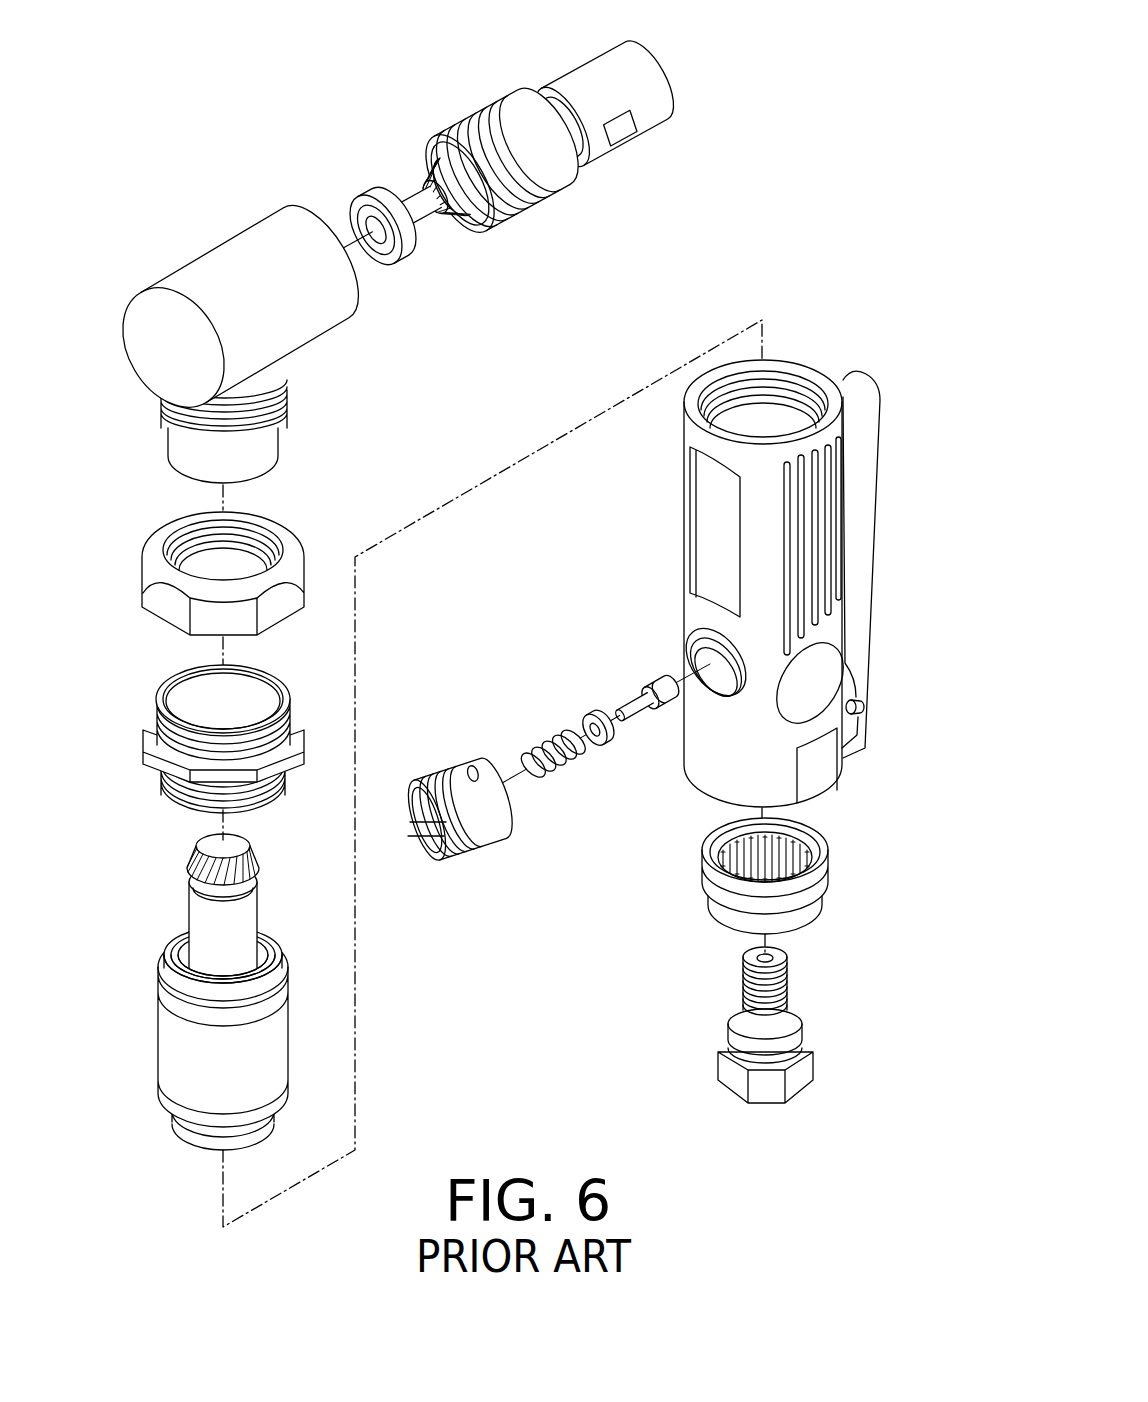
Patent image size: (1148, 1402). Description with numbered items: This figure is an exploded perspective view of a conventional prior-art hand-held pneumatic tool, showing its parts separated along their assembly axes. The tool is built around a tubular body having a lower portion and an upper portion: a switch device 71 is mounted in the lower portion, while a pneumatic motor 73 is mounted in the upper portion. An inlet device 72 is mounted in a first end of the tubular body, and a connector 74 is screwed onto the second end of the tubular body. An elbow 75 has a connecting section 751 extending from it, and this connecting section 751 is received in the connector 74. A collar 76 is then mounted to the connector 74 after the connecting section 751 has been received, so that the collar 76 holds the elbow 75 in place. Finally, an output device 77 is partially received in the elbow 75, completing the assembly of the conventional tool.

The switch device 71 is at (497, 827).
The inlet device 72 is at (817, 947).
The pneumatic motor 73 is at (280, 1038).
The connector 74 is at (297, 728).
The elbow 75 is at (274, 337).
The connecting section 751 is at (267, 442).
The collar 76 is at (290, 553).
The output device 77 is at (580, 170).